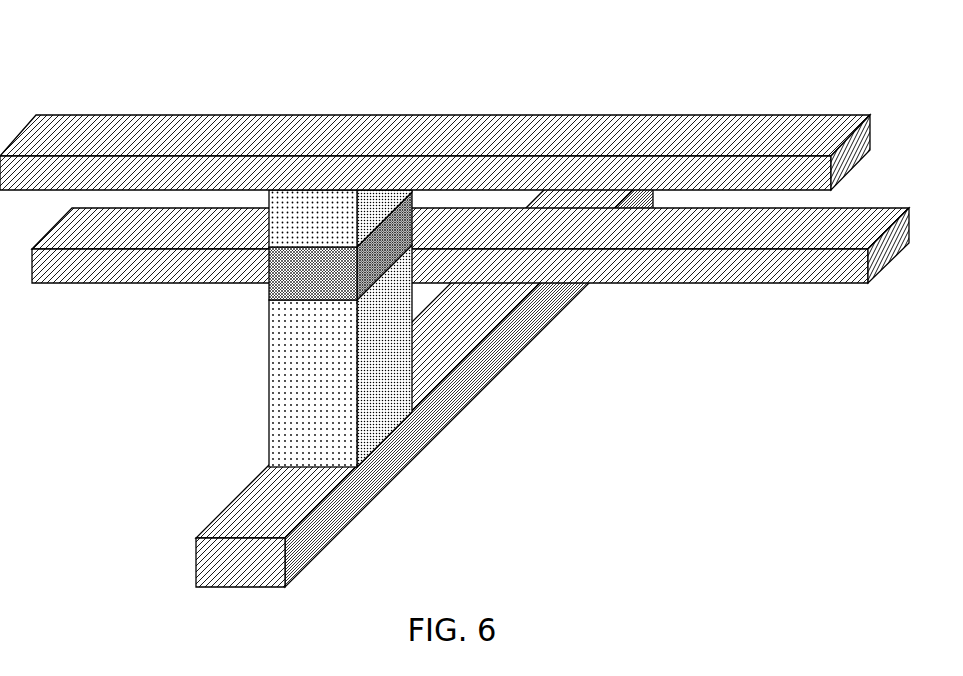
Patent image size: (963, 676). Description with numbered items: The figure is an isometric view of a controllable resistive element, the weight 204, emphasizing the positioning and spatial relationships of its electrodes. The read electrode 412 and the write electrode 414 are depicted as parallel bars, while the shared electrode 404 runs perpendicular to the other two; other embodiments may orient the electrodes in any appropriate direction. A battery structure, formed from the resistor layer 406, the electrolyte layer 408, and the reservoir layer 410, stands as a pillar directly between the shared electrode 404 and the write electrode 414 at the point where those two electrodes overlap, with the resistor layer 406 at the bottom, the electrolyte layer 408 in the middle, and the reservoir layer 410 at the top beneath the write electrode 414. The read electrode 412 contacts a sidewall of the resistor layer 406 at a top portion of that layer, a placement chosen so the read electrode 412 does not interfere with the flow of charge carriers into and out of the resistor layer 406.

The weight 204 is at (90, 72).
The shared electrode 404 is at (372, 502).
The resistor layer 406 is at (268, 436).
The electrolyte layer 408 is at (268, 298).
The reservoir layer 410 is at (321, 190).
The read electrode 412 is at (720, 285).
The write electrode 414 is at (600, 115).